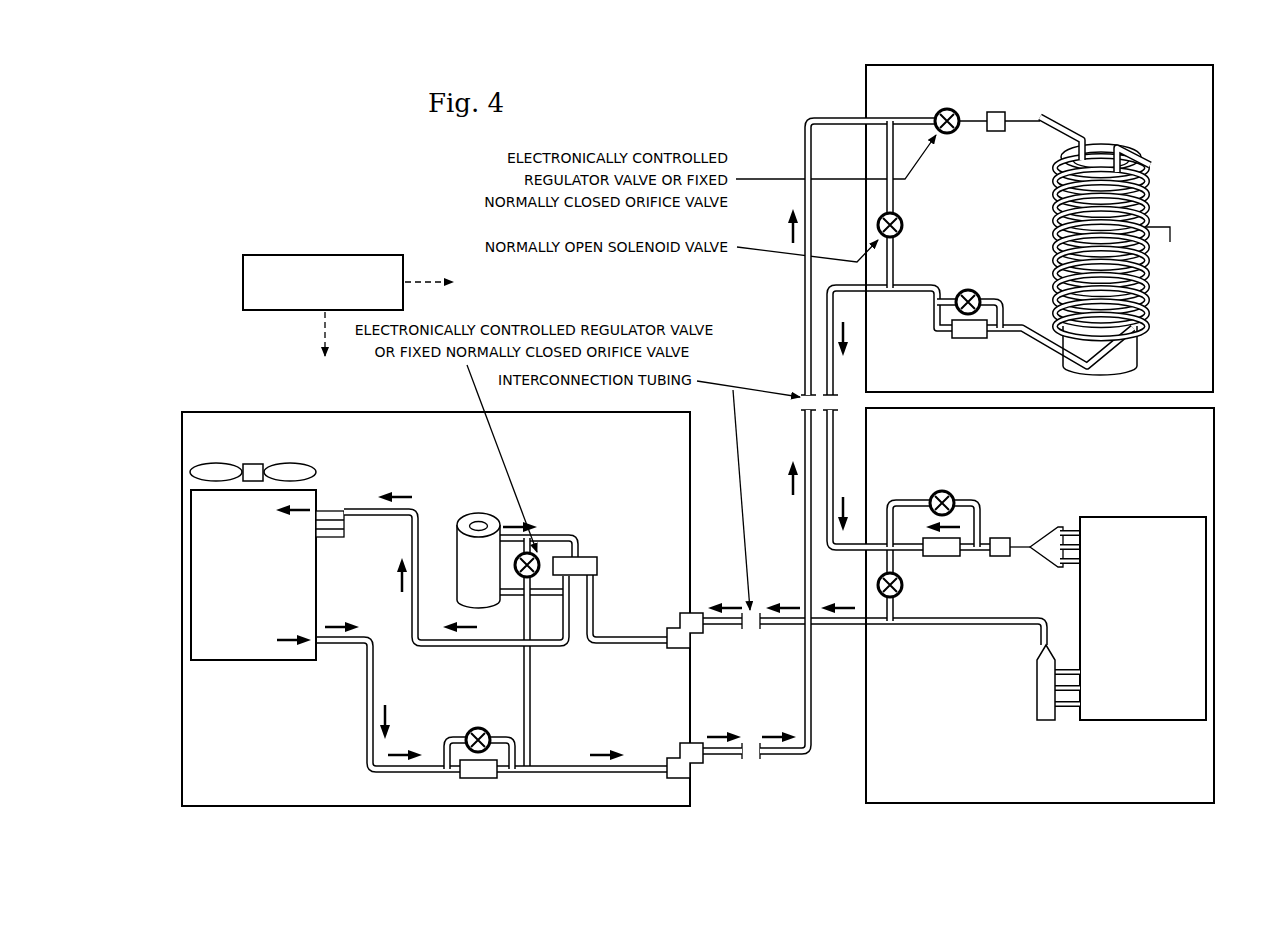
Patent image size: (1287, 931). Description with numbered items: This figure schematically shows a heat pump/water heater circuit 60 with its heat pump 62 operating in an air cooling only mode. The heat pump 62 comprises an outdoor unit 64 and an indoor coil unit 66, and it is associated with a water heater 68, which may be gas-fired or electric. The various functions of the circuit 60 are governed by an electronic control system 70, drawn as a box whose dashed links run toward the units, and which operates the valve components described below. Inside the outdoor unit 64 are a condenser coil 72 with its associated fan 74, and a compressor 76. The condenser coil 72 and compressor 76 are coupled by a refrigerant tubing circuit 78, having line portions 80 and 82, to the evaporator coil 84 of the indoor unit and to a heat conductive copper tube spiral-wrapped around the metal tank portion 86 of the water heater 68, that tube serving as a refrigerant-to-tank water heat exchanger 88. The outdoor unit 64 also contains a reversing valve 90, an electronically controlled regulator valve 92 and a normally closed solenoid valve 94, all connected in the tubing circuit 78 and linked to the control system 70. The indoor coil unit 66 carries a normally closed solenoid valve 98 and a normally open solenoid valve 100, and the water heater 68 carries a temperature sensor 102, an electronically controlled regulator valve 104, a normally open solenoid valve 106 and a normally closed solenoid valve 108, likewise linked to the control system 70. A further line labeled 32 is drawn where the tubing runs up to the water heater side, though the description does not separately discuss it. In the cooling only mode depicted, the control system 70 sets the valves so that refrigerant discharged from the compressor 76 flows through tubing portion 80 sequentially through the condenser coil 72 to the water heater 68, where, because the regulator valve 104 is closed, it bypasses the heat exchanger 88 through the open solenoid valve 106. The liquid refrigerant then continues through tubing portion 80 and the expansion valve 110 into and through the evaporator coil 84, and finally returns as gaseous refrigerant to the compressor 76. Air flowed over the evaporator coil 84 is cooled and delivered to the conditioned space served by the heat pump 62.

The refrigerant line to water unit 32 is at (803, 140).
The heat pump/water heater circuit 60 is at (262, 150).
The heat pump 62 is at (619, 486).
The outdoor unit 64 is at (292, 795).
The indoor coil unit 66 is at (1144, 490).
The water heater 68 is at (1045, 258).
The electronic control system 70 is at (243, 270).
The condenser coil 72 is at (250, 660).
The fan 74 is at (216, 464).
The compressor 76 is at (478, 522).
The refrigerant tubing circuit 78 is at (778, 766).
The line portion 80 is at (357, 508).
The line portion 82 is at (723, 631).
The evaporator coil 84 is at (1136, 722).
The metal tank portion 86 is at (1105, 371).
The refrigerant-to-tank water heat exchanger 88 is at (1053, 290).
The reversing valve 90 is at (599, 565).
The electronically controlled regulator valve 92 is at (518, 579).
The normally closed solenoid valve 94 is at (470, 730).
The normally closed solenoid valve 98 is at (900, 600).
The normally open solenoid valve 100 is at (955, 494).
The temperature sensor 102 is at (997, 134).
The electronically controlled regulator valve 104 is at (950, 136).
The normally open solenoid valve 106 is at (876, 226).
The normally closed solenoid valve 108 is at (962, 290).
The expansion valve 110 is at (1000, 558).